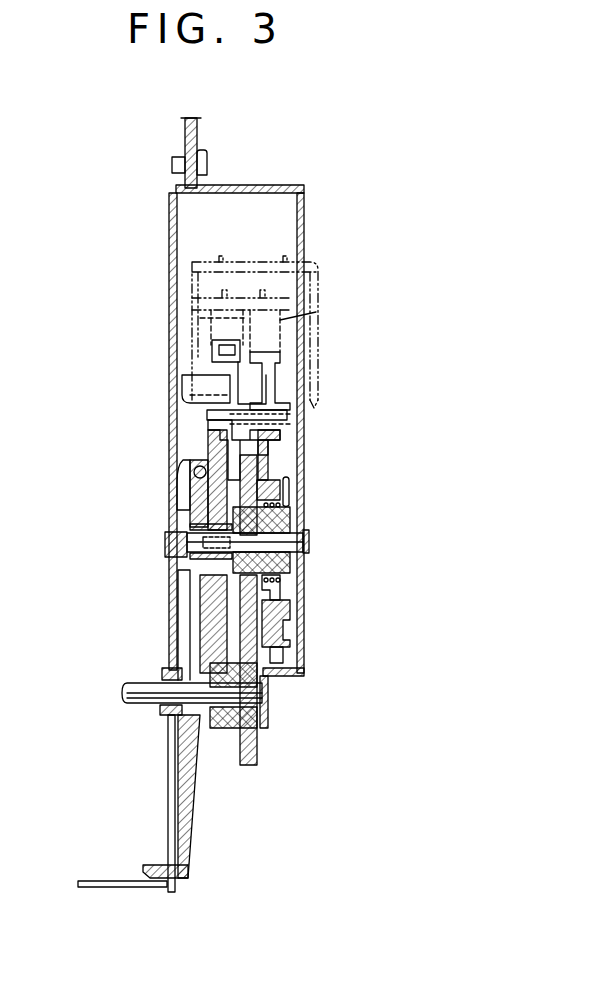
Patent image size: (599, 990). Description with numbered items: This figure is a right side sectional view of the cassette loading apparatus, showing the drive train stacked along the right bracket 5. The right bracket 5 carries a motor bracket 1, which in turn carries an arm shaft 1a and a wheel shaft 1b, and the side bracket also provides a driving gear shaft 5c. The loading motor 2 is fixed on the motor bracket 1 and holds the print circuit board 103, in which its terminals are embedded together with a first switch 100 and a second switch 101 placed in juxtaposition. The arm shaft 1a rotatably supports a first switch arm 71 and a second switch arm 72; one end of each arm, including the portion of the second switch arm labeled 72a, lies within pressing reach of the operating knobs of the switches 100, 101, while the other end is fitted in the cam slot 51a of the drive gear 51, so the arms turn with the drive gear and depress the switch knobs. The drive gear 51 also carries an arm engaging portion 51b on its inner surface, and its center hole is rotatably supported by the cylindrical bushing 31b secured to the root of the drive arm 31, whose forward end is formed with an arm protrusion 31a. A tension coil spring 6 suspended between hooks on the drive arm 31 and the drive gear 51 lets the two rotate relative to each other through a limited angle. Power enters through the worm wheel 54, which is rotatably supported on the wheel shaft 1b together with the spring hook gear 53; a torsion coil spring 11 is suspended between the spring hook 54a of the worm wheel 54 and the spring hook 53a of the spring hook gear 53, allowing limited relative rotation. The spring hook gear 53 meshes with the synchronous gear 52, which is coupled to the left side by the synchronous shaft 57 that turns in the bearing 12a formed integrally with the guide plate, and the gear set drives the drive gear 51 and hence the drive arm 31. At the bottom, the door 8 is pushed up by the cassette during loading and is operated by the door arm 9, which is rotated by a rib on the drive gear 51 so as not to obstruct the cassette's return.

The motor bracket 1 is at (304, 198).
The arm shaft 1a is at (304, 432).
The wheel shaft 1b is at (297, 548).
The loading motor 2 is at (318, 334).
The right bracket 5 is at (169, 212).
The driving gear shaft 5c is at (165, 548).
The tension coil spring 6 is at (195, 466).
The door 8 is at (120, 887).
The door arm 9 is at (188, 866).
The torsion coil spring 11 is at (290, 580).
The bearing 12a is at (170, 711).
The drive arm 31 is at (190, 497).
The arm protrusion 31a is at (183, 478).
The cylindrical bushing 31b is at (190, 516).
The drive gear 51 is at (208, 436).
The cam slot 51a is at (208, 445).
The arm engaging portion 51b is at (190, 604).
The synchronous gear 52 is at (252, 767).
The spring hook gear 53 is at (200, 580).
The spring hook 53a is at (280, 600).
The worm wheel 54 is at (304, 652).
The spring hook 54a is at (290, 480).
The synchronous shaft 57 is at (134, 683).
The first switch arm 71 is at (280, 388).
The second switch arm 72 is at (212, 352).
The contact plate 72a is at (182, 386).
The first switch 100 is at (320, 312).
The second switch 101 is at (212, 320).
The print circuit board 103 is at (313, 260).